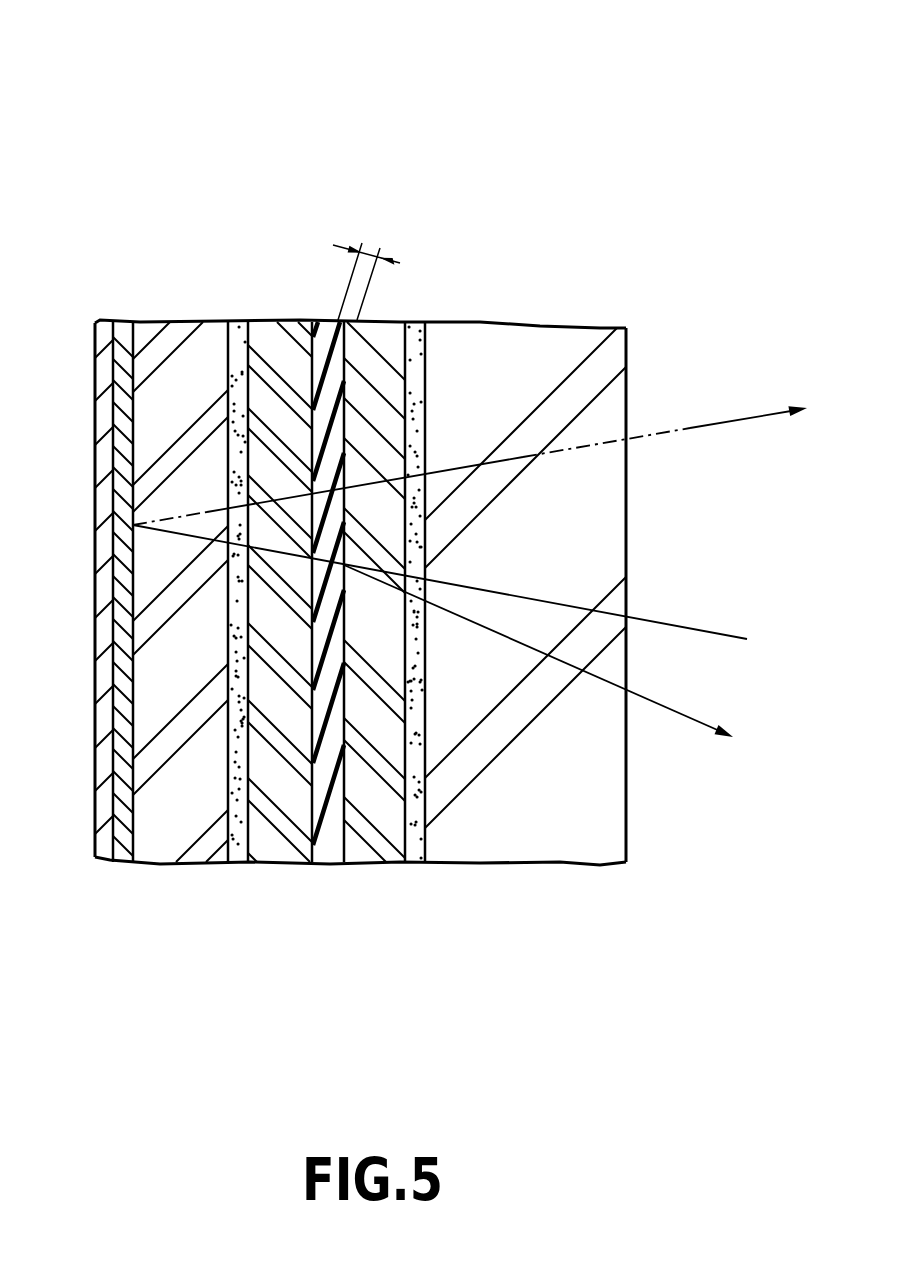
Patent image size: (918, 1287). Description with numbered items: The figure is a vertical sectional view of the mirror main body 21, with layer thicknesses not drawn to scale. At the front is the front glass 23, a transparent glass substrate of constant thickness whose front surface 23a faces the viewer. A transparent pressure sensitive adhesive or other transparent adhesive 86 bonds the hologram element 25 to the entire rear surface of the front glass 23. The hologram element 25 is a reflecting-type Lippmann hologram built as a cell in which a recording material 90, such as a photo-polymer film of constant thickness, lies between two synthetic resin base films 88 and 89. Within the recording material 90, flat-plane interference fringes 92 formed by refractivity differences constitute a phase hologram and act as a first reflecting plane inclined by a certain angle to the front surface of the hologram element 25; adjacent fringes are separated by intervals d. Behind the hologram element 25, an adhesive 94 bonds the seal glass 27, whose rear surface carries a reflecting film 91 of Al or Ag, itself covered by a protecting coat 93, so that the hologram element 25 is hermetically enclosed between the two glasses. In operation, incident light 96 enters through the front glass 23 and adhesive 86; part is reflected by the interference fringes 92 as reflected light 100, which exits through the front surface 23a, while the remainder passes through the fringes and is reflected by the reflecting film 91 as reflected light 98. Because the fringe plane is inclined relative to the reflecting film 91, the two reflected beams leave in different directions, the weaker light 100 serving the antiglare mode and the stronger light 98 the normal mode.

The mirror main body 21 is at (681, 286).
The front glass 23 is at (610, 512).
The front surface 23a is at (625, 548).
The hologram element 25 is at (377, 555).
The seal glass 27 is at (160, 865).
The transparent adhesive 86 is at (425, 353).
The base film 88 is at (288, 865).
The base film 89 is at (386, 641).
The recording material 90 is at (332, 865).
The reflecting film 91 is at (123, 322).
The interference fringes 92 is at (312, 382).
The protecting coat 93 is at (102, 467).
The adhesive 94 is at (242, 322).
The incident light 96 is at (695, 627).
The reflected light 98 is at (697, 424).
The reflected light 100 is at (667, 710).
The interval d is at (372, 240).